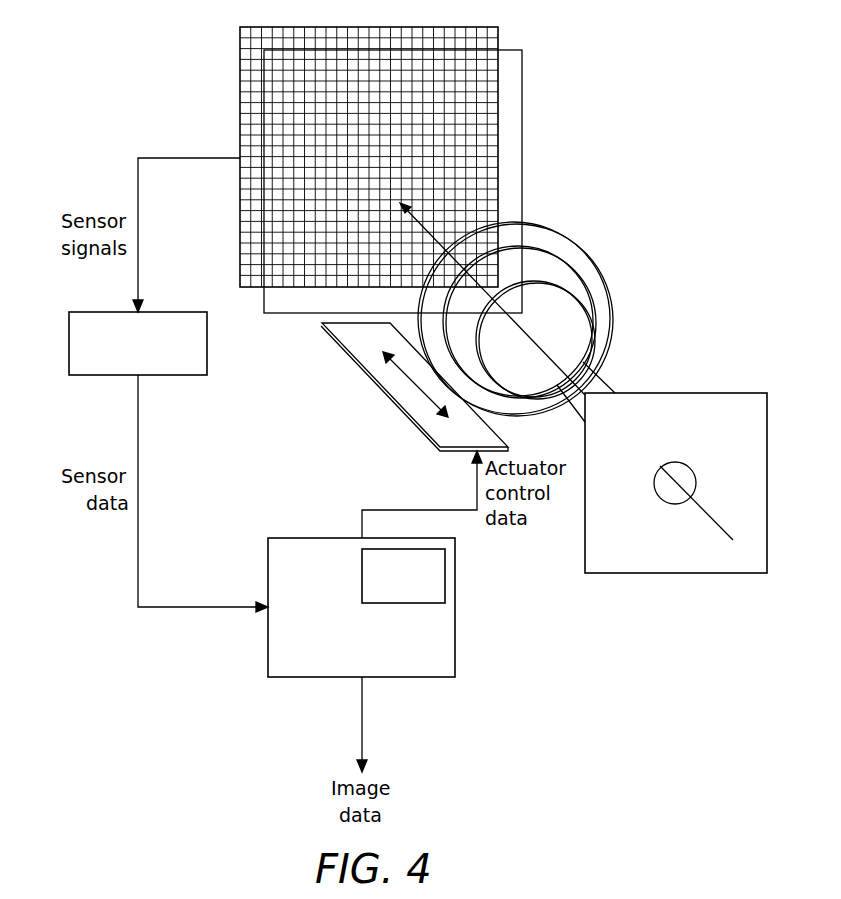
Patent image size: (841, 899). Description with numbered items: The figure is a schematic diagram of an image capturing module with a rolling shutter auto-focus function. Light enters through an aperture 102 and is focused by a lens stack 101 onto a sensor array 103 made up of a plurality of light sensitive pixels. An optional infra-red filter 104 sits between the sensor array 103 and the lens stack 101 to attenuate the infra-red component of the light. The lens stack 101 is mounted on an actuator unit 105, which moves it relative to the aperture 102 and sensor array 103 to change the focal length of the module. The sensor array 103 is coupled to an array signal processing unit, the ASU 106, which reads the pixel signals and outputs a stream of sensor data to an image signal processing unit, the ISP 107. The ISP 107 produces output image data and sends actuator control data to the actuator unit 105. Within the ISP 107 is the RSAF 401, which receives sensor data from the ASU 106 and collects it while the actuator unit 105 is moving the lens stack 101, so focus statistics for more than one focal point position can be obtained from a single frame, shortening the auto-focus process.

The lens stack 101 is at (550, 234).
The aperture 102 is at (683, 463).
The sensor array 103 is at (240, 38).
The infra-red filter 104 is at (522, 68).
The actuator unit 105 is at (378, 386).
The array signal processing unit (ASU) 106 is at (69, 326).
The image signal processing unit (ISP) 107 is at (455, 660).
The rolling shutter auto-focus function (RSAF) 401 is at (445, 584).